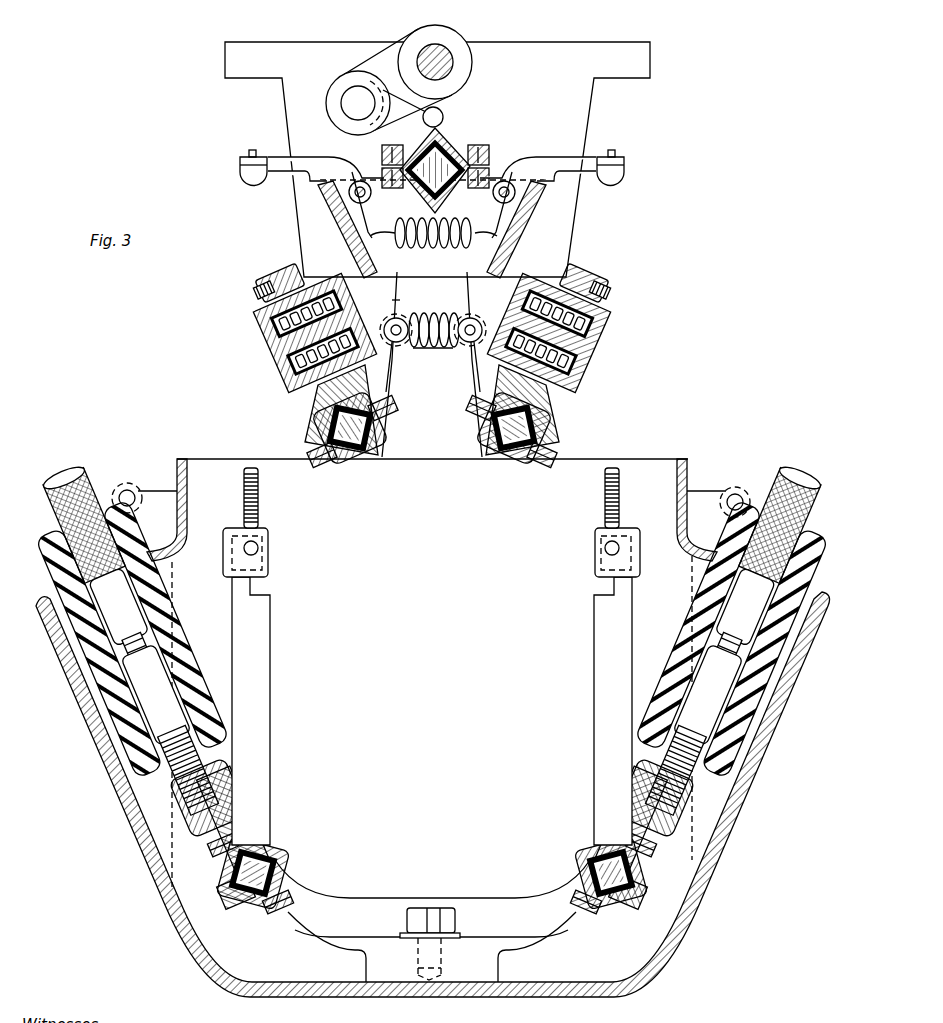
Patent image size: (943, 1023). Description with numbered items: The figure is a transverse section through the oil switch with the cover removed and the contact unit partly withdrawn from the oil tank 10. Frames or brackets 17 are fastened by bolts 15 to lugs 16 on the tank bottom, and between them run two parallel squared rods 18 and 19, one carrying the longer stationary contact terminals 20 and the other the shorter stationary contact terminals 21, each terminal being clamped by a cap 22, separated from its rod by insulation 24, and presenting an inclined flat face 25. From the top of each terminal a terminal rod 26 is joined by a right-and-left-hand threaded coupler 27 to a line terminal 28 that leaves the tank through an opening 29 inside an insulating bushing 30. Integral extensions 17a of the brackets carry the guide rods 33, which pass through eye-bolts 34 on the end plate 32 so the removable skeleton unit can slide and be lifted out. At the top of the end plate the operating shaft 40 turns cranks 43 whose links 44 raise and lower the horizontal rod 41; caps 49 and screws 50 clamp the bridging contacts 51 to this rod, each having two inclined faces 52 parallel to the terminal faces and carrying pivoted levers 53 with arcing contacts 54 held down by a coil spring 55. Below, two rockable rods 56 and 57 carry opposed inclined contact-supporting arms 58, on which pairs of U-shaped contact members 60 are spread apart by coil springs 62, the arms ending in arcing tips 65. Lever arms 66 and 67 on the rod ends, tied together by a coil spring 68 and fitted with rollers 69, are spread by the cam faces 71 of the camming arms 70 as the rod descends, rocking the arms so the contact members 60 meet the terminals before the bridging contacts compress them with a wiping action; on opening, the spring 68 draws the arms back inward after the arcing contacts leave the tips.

The oil tank 10 is at (283, 987).
The bolts 15 is at (408, 921).
The lugs 16 is at (499, 958).
The frames or brackets 17 is at (328, 894).
The extensions 17a is at (268, 635).
The rod or bar 18 is at (276, 866).
The rod or bar 19 is at (577, 862).
The stationary contact terminals 20 is at (233, 796).
The stationary contact terminals 21 is at (628, 786).
The caps 22 is at (245, 905).
The insulation 24 is at (228, 886).
The inclined flat face 25 is at (262, 808).
The terminal rod 26 is at (180, 769).
The right-and-left-hand threaded coupler 27 is at (433, 695).
The line terminal 28 is at (62, 477).
The openings 29 is at (149, 550).
The insulating bushings 30 is at (116, 500).
The end plate 32 is at (585, 152).
The guide rods or supporting bars 33 is at (262, 548).
The eye-bolts 34 is at (260, 504).
The operating shaft 40 is at (445, 55).
The vertically movable horizontal rod 41 is at (415, 190).
The cranks 43 is at (385, 66).
The links 44 is at (380, 162).
The caps 49 is at (447, 134).
The screws 50 is at (488, 151).
The bridging contacts 51 is at (340, 211).
The inclined faces 52 is at (356, 250).
The arms or levers 53 is at (556, 164).
The auxiliary or arcing contacts 54 is at (243, 178).
The coil spring 55 is at (438, 248).
The rod or bar 56 is at (356, 456).
The rod or bar 57 is at (508, 456).
The contact-supporting arms 58 is at (312, 406).
The contact members 60 is at (600, 321).
The coil springs 62 is at (258, 293).
The arcing tips 65 is at (262, 276).
The levers or arms 66 is at (397, 368).
The levers or arms 67 is at (470, 368).
The coil spring 68 is at (436, 350).
The rollers 69 is at (390, 325).
The arms 70 is at (404, 290).
The inclined or cam faces 71 is at (408, 304).